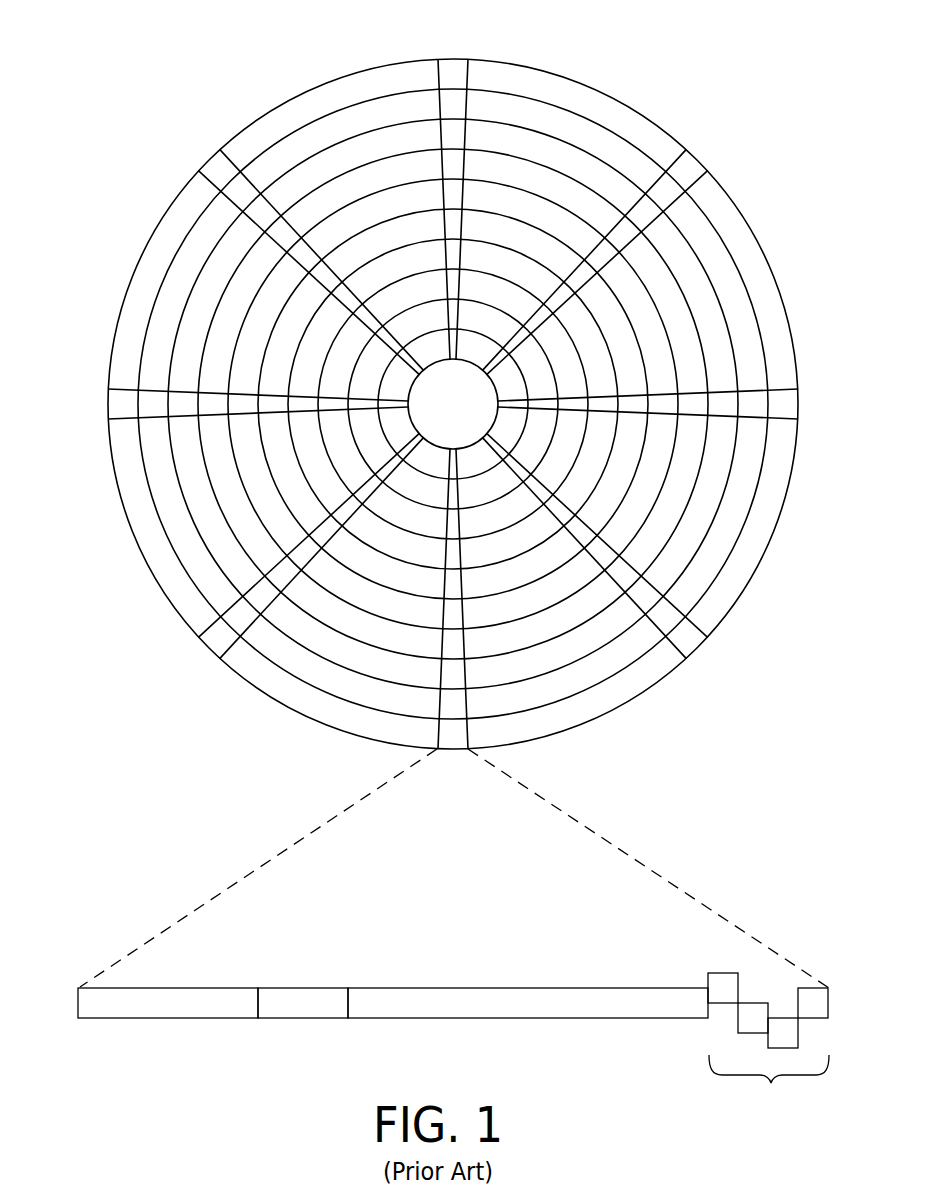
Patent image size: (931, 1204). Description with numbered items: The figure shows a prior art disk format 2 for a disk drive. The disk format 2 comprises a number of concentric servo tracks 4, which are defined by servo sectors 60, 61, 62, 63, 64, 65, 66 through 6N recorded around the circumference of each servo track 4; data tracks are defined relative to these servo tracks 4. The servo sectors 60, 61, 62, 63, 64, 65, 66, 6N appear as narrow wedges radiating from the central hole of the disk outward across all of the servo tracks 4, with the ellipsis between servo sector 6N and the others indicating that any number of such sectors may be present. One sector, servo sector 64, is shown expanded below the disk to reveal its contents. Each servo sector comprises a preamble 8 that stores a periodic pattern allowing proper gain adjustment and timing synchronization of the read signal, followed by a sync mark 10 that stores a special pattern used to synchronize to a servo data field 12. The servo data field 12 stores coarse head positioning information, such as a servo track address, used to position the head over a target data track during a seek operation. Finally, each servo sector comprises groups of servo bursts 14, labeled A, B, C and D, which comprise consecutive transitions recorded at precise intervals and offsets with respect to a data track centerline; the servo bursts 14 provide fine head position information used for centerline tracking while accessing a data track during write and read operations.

The disk format 2 is at (452, 416).
The servo track 4 is at (570, 128).
The servo sector 60 is at (455, 70).
The servo sector 61 is at (688, 168).
The servo sector 62 is at (790, 404).
The servo sector 63 is at (690, 643).
The servo sector 64 is at (303, 832).
The servo sector 65 is at (214, 643).
The servo sector 66 is at (112, 404).
The servo sector 6N is at (281, 240).
The preamble 8 is at (147, 1019).
The sync mark 10 is at (300, 1019).
The servo data field 12 is at (516, 1019).
The servo bursts 14 is at (697, 953).